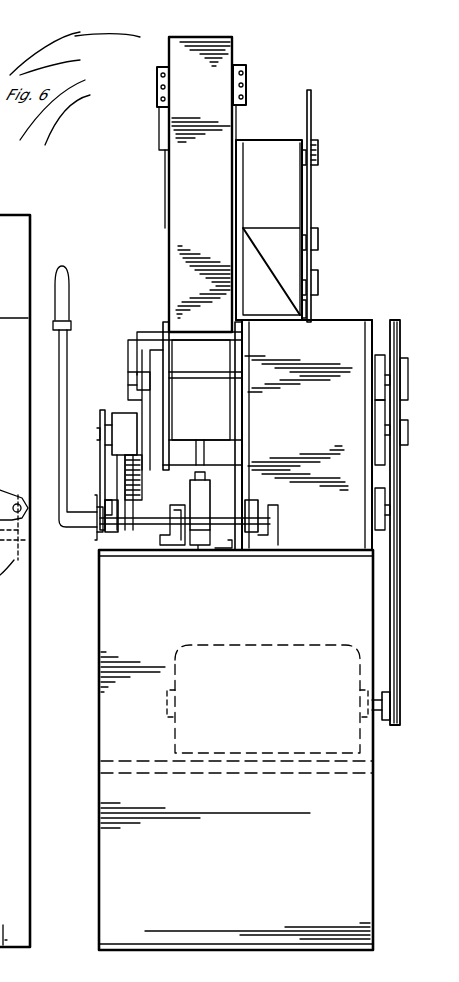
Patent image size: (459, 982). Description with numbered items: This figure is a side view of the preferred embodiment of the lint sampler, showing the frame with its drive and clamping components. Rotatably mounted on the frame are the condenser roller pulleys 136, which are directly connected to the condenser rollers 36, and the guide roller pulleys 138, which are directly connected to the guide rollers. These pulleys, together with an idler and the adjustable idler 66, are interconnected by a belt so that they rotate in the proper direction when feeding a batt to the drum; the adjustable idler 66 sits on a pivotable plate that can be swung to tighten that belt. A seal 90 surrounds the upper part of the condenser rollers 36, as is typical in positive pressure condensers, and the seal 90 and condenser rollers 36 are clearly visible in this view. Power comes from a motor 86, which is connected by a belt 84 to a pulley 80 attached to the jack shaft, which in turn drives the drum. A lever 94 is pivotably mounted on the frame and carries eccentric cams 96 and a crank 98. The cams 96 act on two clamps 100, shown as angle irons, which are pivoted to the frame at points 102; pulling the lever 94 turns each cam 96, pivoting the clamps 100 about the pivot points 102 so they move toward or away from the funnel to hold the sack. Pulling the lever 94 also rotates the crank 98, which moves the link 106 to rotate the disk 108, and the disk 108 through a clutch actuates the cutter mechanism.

The condenser rollers 36 is at (166, 182).
The adjustable idler 66 is at (302, 226).
The pulley 80 is at (390, 320).
The belt 84 is at (392, 585).
The motor 86 is at (265, 645).
The seal 90 is at (246, 75).
The lever 94 is at (72, 274).
The eccentric cams 96 is at (112, 538).
The crank 98 is at (100, 530).
The clamps 100 is at (160, 540).
The pivot points 102 is at (200, 545).
The link 106 is at (110, 445).
The disk 108 is at (136, 385).
The condenser roller pulleys 136 is at (312, 94).
The guide roller pulleys 138 is at (306, 314).